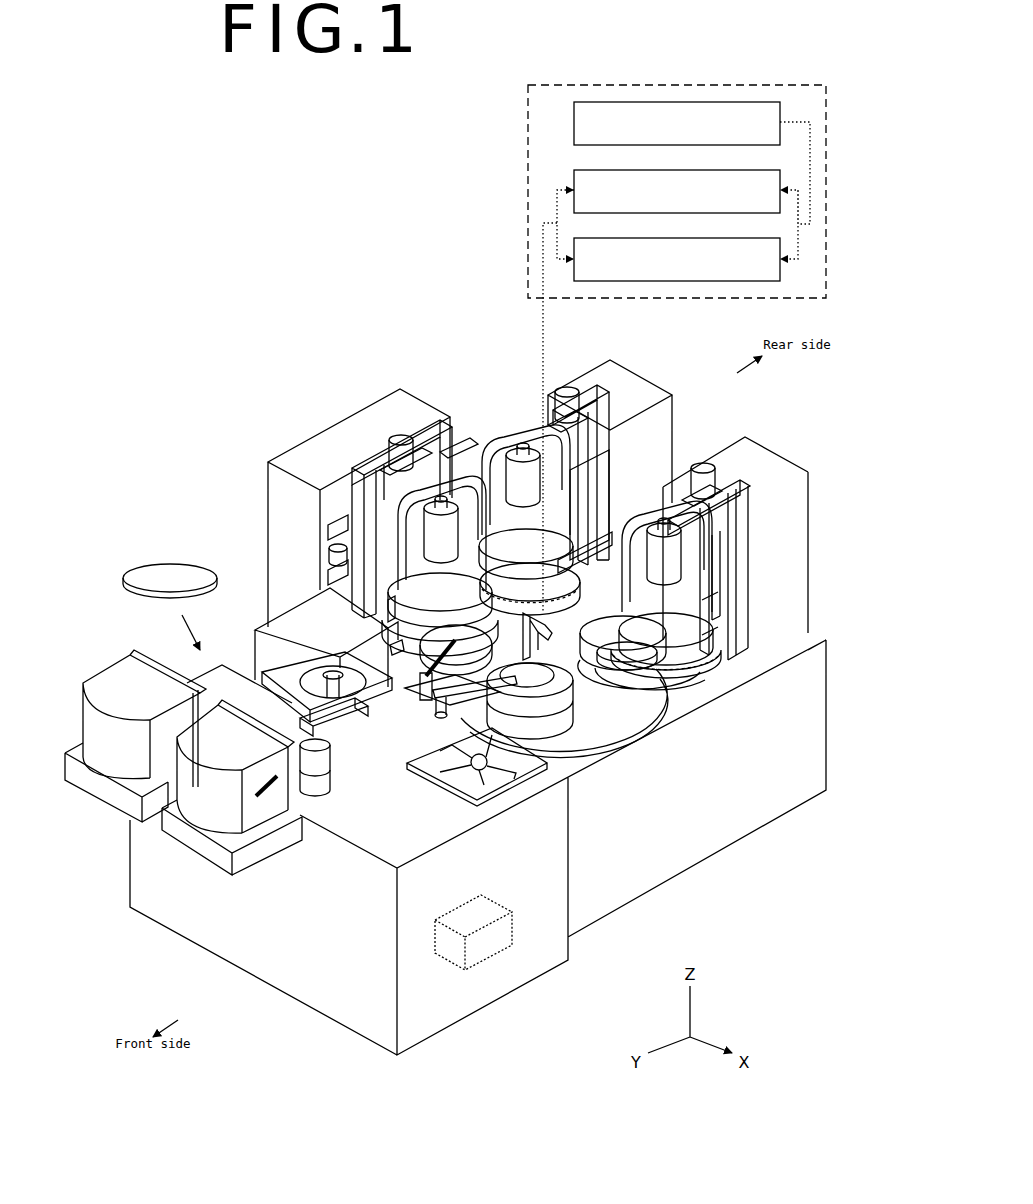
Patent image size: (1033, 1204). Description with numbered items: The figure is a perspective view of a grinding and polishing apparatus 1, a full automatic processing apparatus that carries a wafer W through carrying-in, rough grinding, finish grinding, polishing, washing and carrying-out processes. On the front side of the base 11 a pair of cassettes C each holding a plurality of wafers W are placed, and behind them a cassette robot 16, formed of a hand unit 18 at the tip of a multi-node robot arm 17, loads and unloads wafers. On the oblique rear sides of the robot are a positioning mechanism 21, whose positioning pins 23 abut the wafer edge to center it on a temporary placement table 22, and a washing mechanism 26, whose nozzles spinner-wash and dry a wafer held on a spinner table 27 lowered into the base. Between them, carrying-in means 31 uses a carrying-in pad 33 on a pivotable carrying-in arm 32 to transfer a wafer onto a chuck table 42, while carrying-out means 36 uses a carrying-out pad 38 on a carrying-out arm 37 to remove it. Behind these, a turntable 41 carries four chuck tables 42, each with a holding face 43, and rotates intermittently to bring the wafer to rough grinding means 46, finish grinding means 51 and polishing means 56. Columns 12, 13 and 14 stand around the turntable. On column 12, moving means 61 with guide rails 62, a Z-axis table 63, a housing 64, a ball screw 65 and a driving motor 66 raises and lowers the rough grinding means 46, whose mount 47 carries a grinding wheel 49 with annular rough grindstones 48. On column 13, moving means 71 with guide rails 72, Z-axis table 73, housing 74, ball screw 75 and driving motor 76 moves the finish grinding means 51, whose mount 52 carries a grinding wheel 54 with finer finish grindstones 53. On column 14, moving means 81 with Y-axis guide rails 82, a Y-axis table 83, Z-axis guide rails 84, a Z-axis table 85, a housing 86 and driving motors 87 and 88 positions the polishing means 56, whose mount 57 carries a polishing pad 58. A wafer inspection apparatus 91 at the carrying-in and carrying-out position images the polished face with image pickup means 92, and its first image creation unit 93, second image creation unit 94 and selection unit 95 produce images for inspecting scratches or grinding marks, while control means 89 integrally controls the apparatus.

The grinding and polishing apparatus 1 is at (211, 398).
The base 11 is at (479, 996).
The column 12 is at (770, 455).
The column 13 is at (636, 378).
The column 14 is at (440, 418).
The cassette robot 16 is at (268, 714).
The robot arm 17 is at (300, 768).
The hand unit 18 is at (330, 776).
The positioning mechanism 21 is at (428, 800).
The temporary placement table 22 is at (480, 775).
The positioning pins 23 is at (510, 775).
The washing mechanism 26 is at (304, 623).
The spinner table 27 is at (312, 672).
The carrying-in means 31 is at (436, 708).
The carrying-in arm 32 is at (490, 688).
The carrying-in pad 33 is at (477, 767).
The carrying-out means 36 is at (388, 632).
The carrying-out arm 37 is at (390, 648).
The carrying-out pad 38 is at (388, 604).
The turntable 41 is at (628, 715).
The chuck table 42 is at (630, 672).
The holding face 43 is at (640, 668).
The rough grinding means 46 is at (666, 573).
The mount 47 is at (690, 625).
The rough grindstones 48 is at (702, 681).
The grinding wheel 49 is at (690, 655).
The finish grinding means 51 is at (529, 504).
The mount 52 is at (496, 548).
The finish grindstones 53 is at (530, 589).
The grinding wheel 54 is at (530, 589).
The polishing means 56 is at (440, 549).
The mount 57 is at (430, 600).
The polishing pad 58 is at (456, 650).
The moving means 61 is at (729, 536).
The guide rails 62 is at (684, 485).
The Z-axis table 63 is at (725, 545).
The housing 64 is at (718, 585).
The ball screw 65 is at (720, 628).
The driving motor 66 is at (707, 463).
The moving means 71 is at (571, 452).
The guide rails 72 is at (575, 405).
The Z-axis table 73 is at (607, 455).
The housing 74 is at (575, 510).
The ball screw 75 is at (570, 548).
The driving motor 76 is at (573, 385).
The moving means 81 is at (378, 499).
The guide rails 82 is at (328, 530).
The Y-axis table 83 is at (372, 466).
The guide rails 84 is at (418, 452).
The Z-axis table 85 is at (448, 452).
The housing 86 is at (426, 616).
The driving motor 87 is at (329, 552).
The driving motor 88 is at (406, 437).
The control means 89 is at (498, 896).
The wafer inspection apparatus 91 is at (585, 623).
The image pickup means 92 is at (532, 676).
The first image creation unit 93 is at (594, 170).
The second image creation unit 94 is at (603, 238).
The selection unit 95 is at (574, 112).
The wafer W is at (178, 570).
The cassette C is at (102, 778).